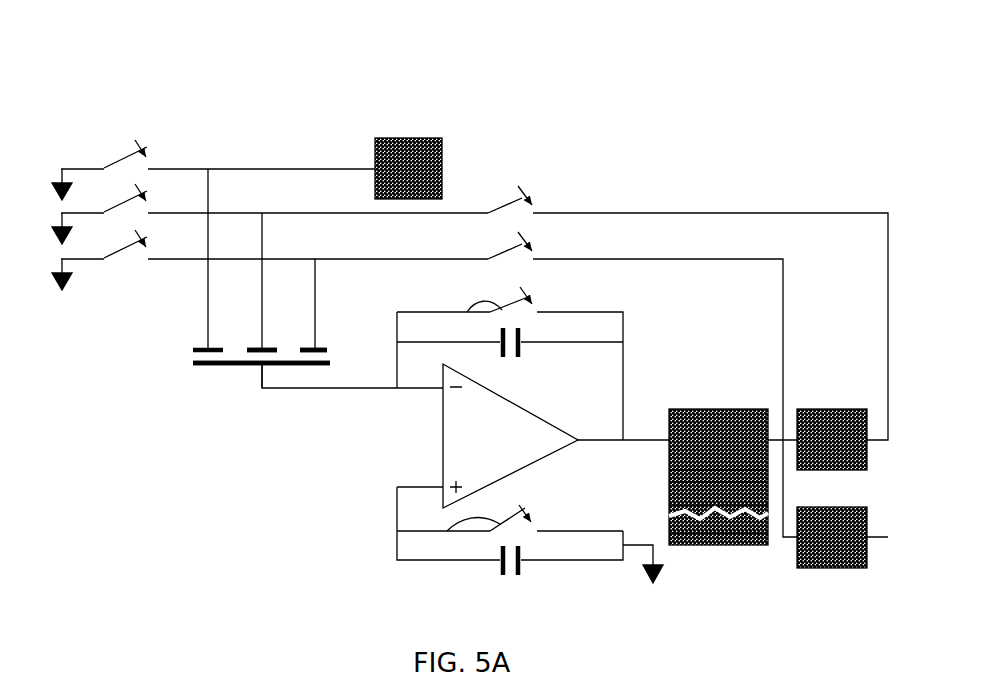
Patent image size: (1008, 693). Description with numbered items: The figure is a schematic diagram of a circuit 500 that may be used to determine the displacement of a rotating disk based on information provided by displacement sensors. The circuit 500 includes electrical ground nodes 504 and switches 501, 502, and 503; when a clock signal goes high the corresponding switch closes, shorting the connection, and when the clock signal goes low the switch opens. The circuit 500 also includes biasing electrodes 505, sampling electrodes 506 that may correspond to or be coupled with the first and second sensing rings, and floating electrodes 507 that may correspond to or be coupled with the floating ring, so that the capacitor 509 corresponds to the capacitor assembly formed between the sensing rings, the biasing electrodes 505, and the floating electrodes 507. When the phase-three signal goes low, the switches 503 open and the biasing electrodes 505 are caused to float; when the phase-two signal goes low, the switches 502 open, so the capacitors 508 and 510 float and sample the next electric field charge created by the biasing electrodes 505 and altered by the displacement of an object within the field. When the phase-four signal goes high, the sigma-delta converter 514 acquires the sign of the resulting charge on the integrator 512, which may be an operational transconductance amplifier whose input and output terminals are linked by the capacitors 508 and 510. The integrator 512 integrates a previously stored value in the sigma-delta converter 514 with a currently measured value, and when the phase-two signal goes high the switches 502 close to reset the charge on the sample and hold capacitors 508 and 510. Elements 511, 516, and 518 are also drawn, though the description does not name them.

The circuit 500 is at (133, 63).
The switches 501 is at (104, 258).
The switches 502 is at (492, 300).
The switches 503 is at (488, 258).
The electrical ground nodes 504 is at (52, 190).
The biasing electrodes 505 is at (196, 350).
The sampling electrodes 506 is at (277, 348).
The floating electrodes 507 is at (237, 366).
The capacitor 508 is at (522, 330).
The capacitor 509 is at (205, 398).
The capacitor 510 is at (500, 567).
The control block 511 is at (375, 137).
The integrator 512 is at (510, 436).
The sigma-delta converter 514 is at (750, 409).
The once-per-revolution block 516 is at (858, 409).
The non-repeatable runout block 518 is at (858, 568).